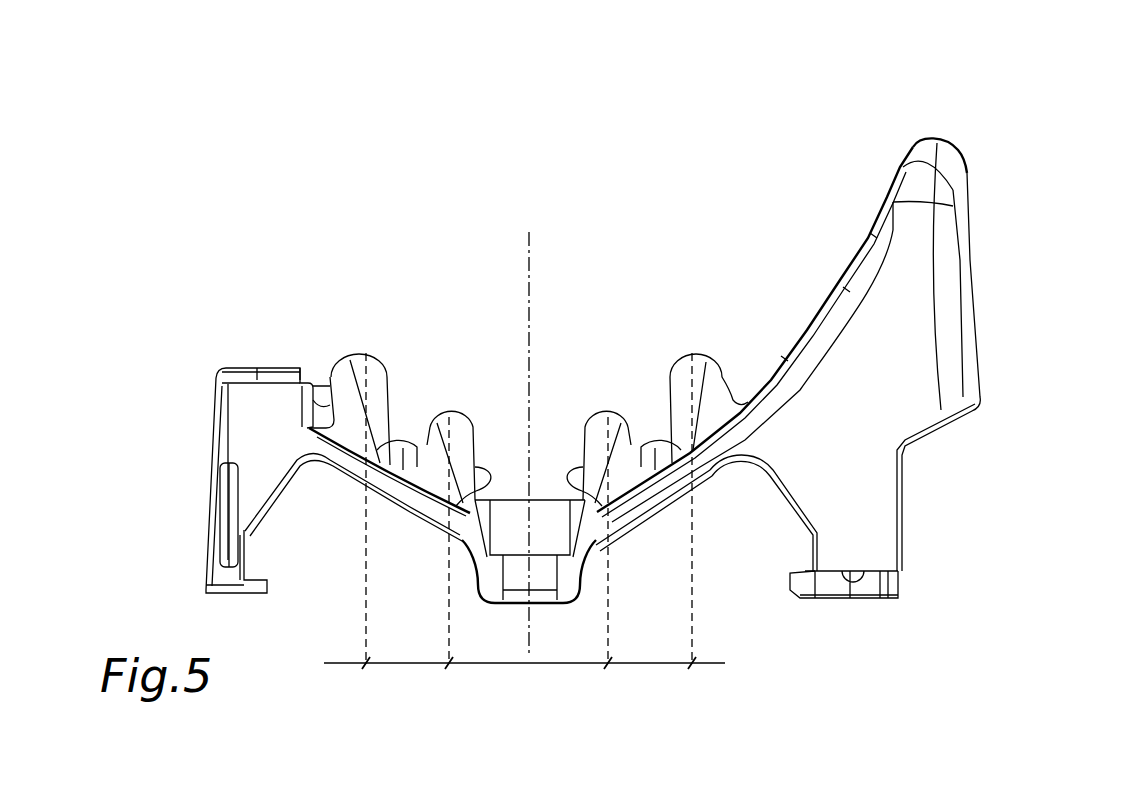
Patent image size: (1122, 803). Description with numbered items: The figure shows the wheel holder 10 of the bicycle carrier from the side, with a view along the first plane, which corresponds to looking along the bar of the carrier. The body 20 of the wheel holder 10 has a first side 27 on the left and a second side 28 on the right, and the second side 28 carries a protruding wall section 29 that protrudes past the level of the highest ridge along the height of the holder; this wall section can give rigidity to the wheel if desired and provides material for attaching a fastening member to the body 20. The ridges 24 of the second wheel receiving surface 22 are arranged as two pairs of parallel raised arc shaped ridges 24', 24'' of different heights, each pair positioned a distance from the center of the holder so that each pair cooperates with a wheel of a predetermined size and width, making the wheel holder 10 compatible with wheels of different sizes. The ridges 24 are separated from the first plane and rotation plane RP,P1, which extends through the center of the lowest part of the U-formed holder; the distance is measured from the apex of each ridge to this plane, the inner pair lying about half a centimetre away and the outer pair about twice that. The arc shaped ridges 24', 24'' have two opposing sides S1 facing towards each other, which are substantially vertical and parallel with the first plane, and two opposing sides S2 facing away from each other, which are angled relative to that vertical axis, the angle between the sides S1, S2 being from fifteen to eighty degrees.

The wheel holder 10 is at (1031, 160).
The body 20 is at (893, 390).
The second wheel receiving surface 22 is at (504, 381).
The ridges 24 is at (526, 407).
The arc shaped ridge pair 24' is at (528, 366).
The arc shaped ridge pair 24'' is at (529, 456).
The first side 27 is at (208, 473).
The second side 28 is at (977, 258).
The protruding wall section 29 is at (945, 142).
The rotation plane and first plane RP,P1 is at (531, 254).
The opposing sides facing towards each other S1 is at (458, 503).
The opposing sides facing away from each other S2 is at (387, 444).